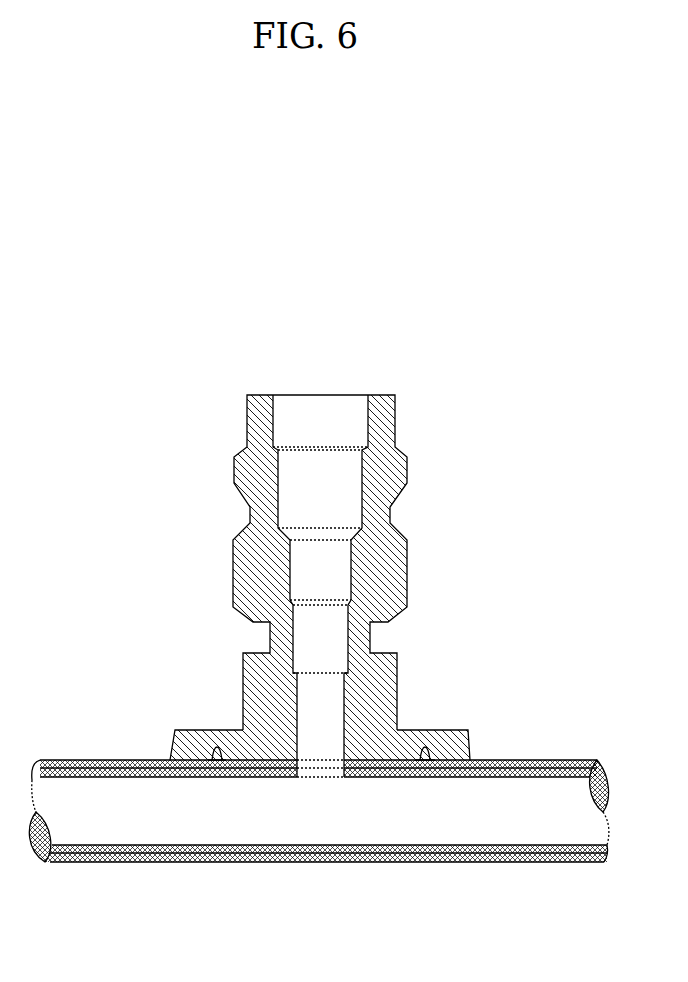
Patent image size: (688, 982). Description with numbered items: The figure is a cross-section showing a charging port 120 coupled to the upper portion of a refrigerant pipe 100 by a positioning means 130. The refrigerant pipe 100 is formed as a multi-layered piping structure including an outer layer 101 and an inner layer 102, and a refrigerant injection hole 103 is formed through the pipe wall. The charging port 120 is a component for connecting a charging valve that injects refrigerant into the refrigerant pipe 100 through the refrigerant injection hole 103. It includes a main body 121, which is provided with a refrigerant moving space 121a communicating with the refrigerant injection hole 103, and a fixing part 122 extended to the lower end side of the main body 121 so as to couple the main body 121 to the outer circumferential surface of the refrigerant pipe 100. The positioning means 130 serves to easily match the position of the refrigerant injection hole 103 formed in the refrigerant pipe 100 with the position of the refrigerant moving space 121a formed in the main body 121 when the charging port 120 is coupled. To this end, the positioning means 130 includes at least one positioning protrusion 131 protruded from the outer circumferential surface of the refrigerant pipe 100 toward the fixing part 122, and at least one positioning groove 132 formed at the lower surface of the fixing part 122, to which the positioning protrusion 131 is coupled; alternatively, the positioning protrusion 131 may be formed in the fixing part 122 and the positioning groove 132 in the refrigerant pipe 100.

The refrigerant pipe 100 is at (319, 807).
The outer layer 101 is at (458, 862).
The inner layer 102 is at (508, 840).
The refrigerant injection hole 103 is at (318, 777).
The charging port 120 is at (305, 530).
The main body 121 is at (233, 568).
The refrigerant moving space 121a is at (316, 712).
The fixing part 122 is at (191, 723).
The positioning means 130 is at (367, 696).
The positioning protrusion 131 is at (430, 757).
The positioning groove 132 is at (331, 710).